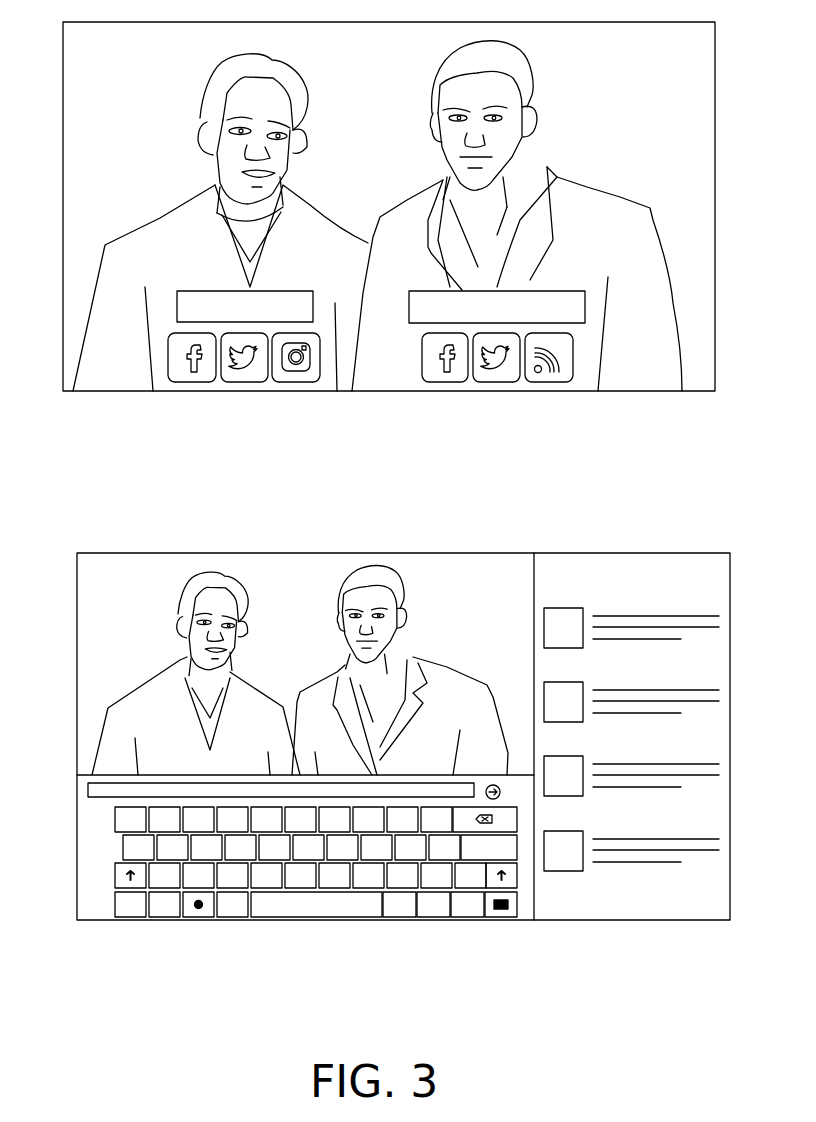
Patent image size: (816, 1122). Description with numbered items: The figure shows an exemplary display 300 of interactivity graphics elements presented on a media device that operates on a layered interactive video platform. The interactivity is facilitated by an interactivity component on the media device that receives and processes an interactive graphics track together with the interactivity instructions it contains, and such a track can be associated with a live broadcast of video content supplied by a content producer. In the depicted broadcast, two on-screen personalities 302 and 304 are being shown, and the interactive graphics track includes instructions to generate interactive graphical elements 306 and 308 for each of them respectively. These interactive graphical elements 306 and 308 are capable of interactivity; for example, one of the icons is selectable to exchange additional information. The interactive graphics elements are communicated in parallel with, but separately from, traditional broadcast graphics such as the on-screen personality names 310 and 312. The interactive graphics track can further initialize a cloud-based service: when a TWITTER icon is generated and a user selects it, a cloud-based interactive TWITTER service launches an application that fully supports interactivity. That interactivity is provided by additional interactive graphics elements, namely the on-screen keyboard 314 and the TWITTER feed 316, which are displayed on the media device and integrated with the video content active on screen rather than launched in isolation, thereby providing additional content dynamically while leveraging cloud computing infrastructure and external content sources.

The display 300 is at (716, 56).
The on-screen personality 302 is at (207, 85).
The on-screen personality 304 is at (535, 70).
The interactive graphical elements 306 is at (167, 352).
The interactive graphical elements 308 is at (580, 350).
The on-screen personality name 310 is at (175, 305).
The on-screen personality name 312 is at (588, 303).
The on-screen keyboard 314 is at (77, 847).
The TWITTER feed 316 is at (730, 798).